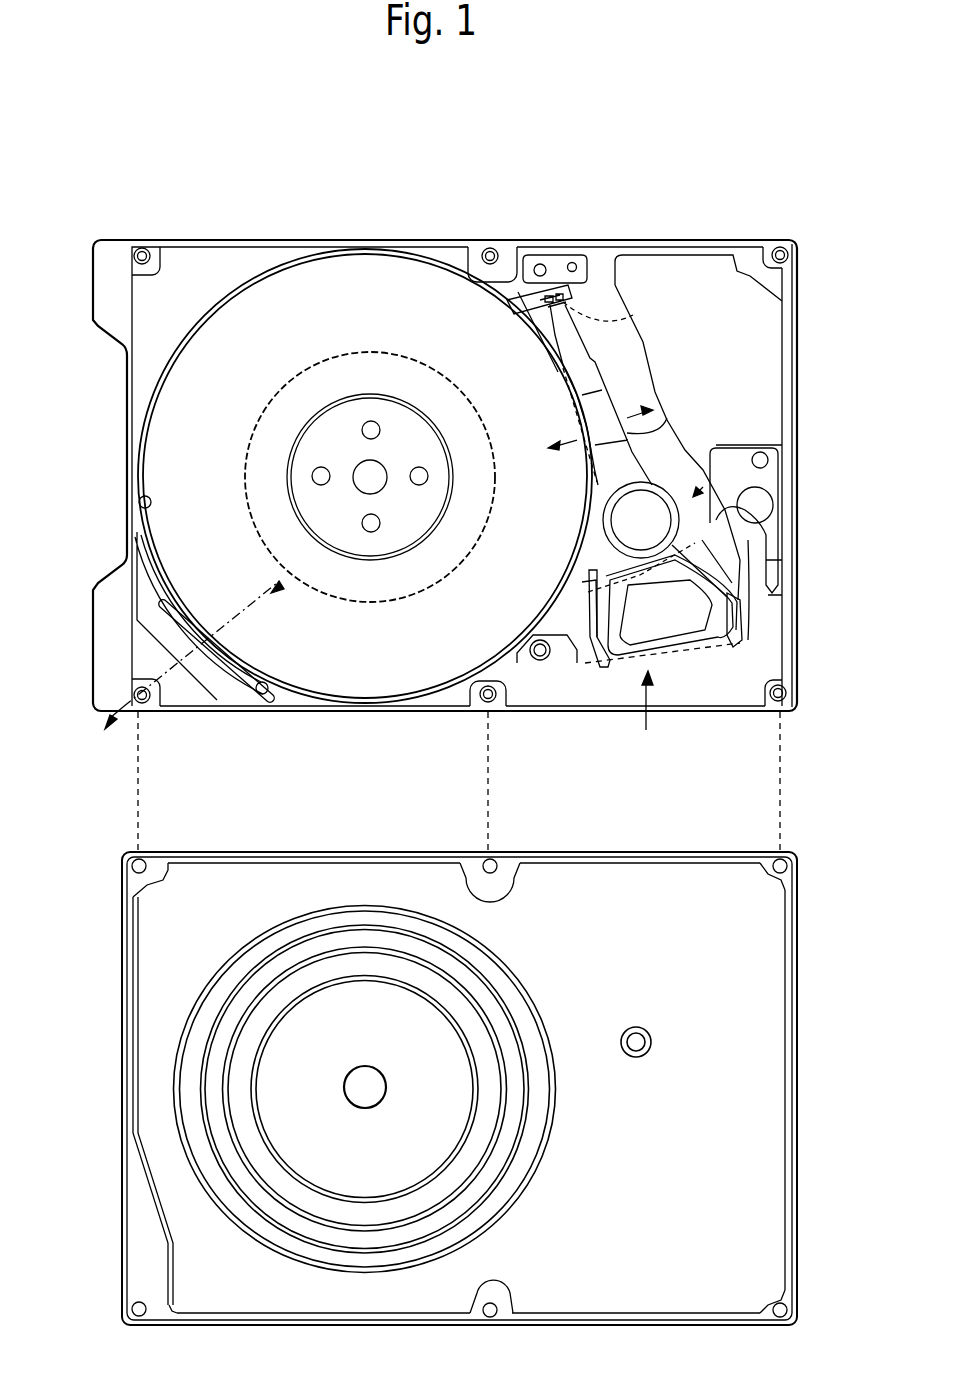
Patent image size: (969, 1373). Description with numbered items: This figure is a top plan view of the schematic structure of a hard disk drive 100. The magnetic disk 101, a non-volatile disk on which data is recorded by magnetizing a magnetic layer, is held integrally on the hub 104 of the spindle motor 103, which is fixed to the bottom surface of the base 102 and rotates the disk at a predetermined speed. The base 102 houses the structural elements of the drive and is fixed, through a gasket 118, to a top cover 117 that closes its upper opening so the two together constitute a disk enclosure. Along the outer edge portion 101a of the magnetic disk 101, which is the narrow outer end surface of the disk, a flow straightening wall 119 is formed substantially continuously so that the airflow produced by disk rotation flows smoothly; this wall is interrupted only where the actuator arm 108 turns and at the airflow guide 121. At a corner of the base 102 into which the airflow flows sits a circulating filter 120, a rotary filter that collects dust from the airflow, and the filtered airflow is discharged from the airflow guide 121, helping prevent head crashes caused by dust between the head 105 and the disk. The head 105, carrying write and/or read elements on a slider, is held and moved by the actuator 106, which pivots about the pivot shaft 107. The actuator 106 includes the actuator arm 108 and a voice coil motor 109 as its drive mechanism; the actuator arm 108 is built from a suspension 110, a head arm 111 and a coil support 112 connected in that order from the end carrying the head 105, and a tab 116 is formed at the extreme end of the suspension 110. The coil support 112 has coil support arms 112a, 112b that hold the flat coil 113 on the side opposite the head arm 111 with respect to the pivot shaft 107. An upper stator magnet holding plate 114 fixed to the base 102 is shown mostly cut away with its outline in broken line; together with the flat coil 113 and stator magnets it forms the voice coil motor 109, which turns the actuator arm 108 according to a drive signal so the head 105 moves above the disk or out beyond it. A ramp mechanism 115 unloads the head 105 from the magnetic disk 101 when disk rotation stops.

The hard disk drive 100 is at (892, 216).
The magnetic disk 101 is at (415, 678).
The outer edge portion 101a is at (370, 250).
The base 102 is at (155, 663).
The spindle motor 103 is at (246, 460).
The hub 104 is at (388, 540).
The head 105 is at (618, 320).
The actuator 106 is at (770, 477).
The pivot shaft 107 is at (620, 522).
The actuator arm 108 is at (695, 455).
The voice coil motor 109 is at (647, 713).
The suspension 110 is at (573, 345).
The head arm 111 is at (663, 418).
The coil support 112 is at (569, 561).
The coil support arm 112a is at (597, 660).
The coil support arm 112b is at (740, 612).
The flat coil 113 is at (692, 640).
The upper stator magnet holding plate 114 is at (775, 570).
The ramp mechanism 115 is at (535, 253).
The tab 116 is at (540, 330).
The top cover 117 is at (605, 850).
The gasket 118 is at (133, 1045).
The flow straightening wall 119 is at (140, 501).
The circulating filter 120 is at (233, 692).
The airflow guide 121 is at (276, 690).